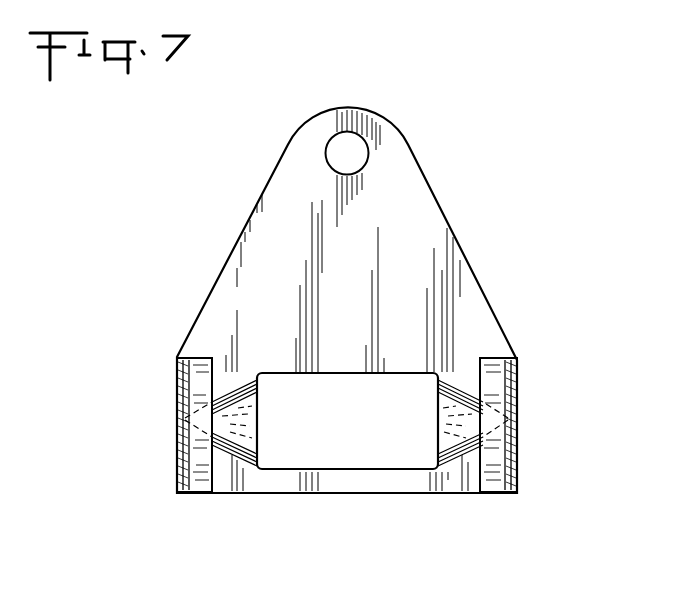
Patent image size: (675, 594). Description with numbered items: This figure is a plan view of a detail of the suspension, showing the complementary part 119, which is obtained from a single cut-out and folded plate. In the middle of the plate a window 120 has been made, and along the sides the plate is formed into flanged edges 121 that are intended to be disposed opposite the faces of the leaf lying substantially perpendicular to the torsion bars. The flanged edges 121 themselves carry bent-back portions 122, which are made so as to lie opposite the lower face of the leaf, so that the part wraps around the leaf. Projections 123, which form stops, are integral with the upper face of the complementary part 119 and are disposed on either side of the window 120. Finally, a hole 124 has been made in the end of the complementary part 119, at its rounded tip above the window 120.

The complementary part 119 is at (447, 200).
The window 120 is at (346, 455).
The flanged edges 121 is at (183, 421).
The bent-back portions 122 is at (192, 478).
The projections 123 is at (437, 405).
The hole 124 is at (345, 149).